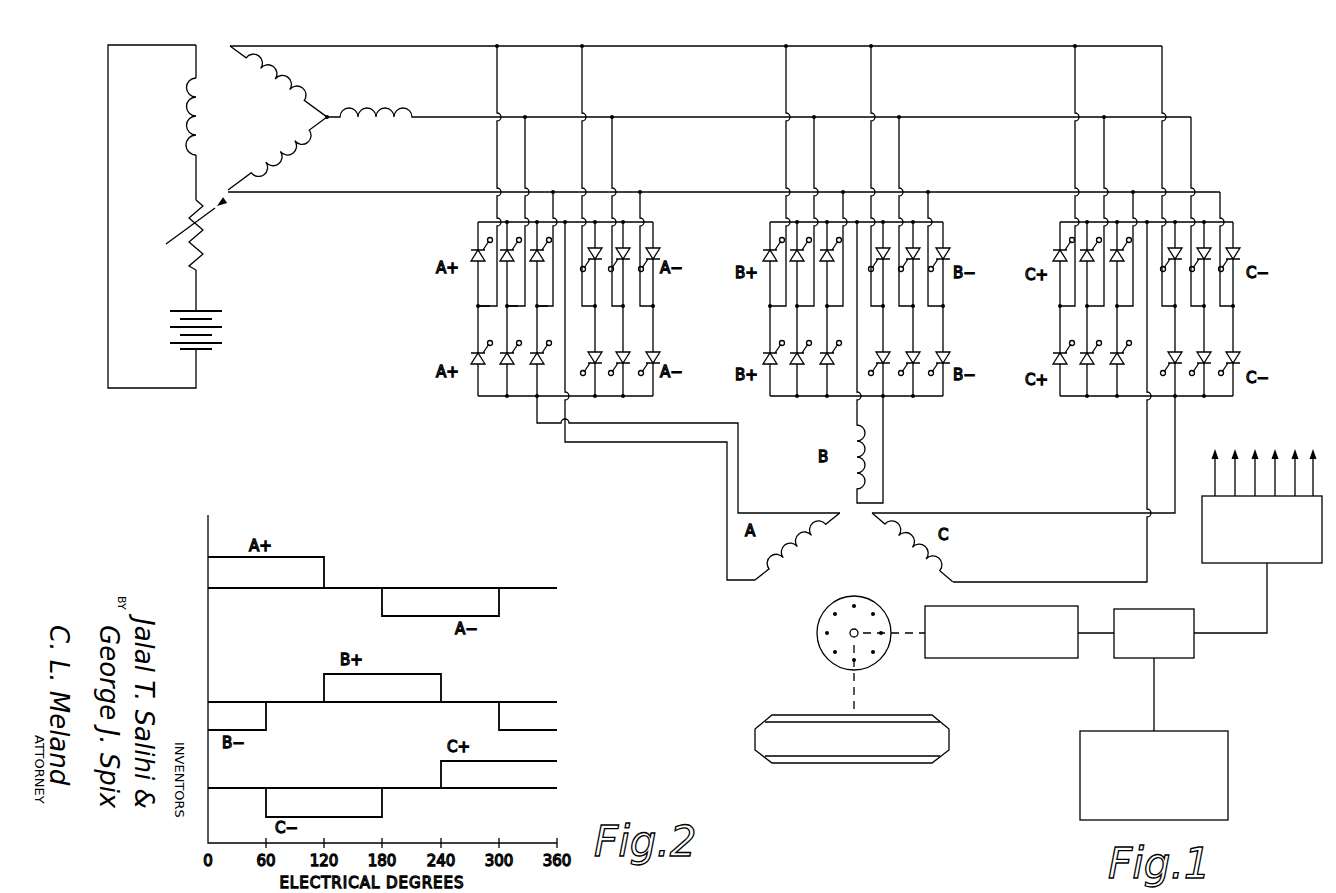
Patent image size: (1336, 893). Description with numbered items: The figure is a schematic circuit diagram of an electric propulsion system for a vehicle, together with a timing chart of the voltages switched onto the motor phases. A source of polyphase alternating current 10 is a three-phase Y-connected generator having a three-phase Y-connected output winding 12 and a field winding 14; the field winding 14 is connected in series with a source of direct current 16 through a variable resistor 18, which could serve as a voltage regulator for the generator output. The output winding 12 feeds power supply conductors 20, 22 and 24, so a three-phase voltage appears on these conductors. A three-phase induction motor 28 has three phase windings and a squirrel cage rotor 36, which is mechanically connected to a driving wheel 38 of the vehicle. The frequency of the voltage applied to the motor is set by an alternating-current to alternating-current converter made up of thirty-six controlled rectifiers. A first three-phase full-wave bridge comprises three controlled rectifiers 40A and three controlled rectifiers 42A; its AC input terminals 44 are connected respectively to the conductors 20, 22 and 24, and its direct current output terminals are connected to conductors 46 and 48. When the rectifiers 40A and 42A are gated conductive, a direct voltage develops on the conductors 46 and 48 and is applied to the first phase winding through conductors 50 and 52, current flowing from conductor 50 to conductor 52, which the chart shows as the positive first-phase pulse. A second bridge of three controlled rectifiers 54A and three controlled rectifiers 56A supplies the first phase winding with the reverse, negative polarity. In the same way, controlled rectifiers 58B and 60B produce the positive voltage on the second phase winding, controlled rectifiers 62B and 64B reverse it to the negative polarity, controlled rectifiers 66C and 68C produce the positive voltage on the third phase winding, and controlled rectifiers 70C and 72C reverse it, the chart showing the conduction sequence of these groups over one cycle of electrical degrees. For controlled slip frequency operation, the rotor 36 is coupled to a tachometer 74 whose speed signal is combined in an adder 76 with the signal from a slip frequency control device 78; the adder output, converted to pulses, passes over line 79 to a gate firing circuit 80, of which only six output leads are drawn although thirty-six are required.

The source of polyphase alternating current 10 is at (238, 211).
The three-phase Y-connected output winding 12 is at (322, 127).
The field winding 14 is at (193, 125).
The source of direct current 16 is at (222, 322).
The variable resistor 18 is at (166, 244).
The power supply conductor 20 is at (652, 47).
The power supply conductor 22 is at (686, 118).
The power supply conductor 24 is at (675, 190).
The three-phase induction motor 28 is at (808, 578).
The squirrel cage rotor 36 is at (858, 596).
The driving wheel 38 is at (851, 742).
The controlled rectifiers 40A is at (472, 250).
The controlled rectifiers 42A is at (473, 362).
The AC input terminals 44 is at (532, 308).
The conductor 46 is at (573, 222).
The conductor 48 is at (636, 396).
The conductor 50 is at (590, 443).
The conductor 52 is at (670, 423).
The controlled rectifiers 54A is at (660, 259).
The controlled rectifiers 56A is at (658, 355).
The controlled rectifiers 58B is at (765, 250).
The controlled rectifiers 60B is at (765, 362).
The controlled rectifiers 62B is at (948, 252).
The controlled rectifiers 64B is at (948, 362).
The controlled rectifiers 66C is at (1057, 250).
The controlled rectifiers 68C is at (1057, 363).
The controlled rectifiers 70C is at (1240, 258).
The controlled rectifiers 72C is at (1240, 362).
The tachometer 74 is at (975, 658).
The adder 76 is at (1172, 658).
The slip frequency control device 78 is at (1228, 765).
The line 79 is at (1237, 633).
The gate firing circuit 80 is at (1282, 563).